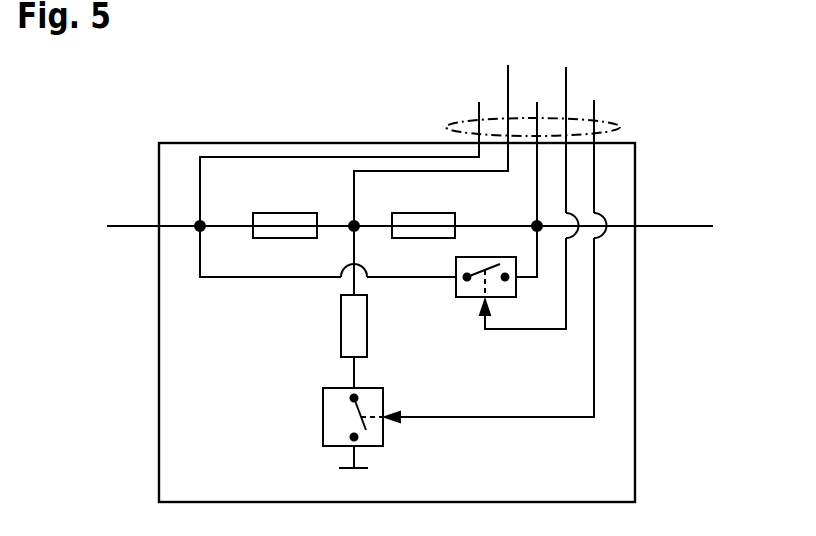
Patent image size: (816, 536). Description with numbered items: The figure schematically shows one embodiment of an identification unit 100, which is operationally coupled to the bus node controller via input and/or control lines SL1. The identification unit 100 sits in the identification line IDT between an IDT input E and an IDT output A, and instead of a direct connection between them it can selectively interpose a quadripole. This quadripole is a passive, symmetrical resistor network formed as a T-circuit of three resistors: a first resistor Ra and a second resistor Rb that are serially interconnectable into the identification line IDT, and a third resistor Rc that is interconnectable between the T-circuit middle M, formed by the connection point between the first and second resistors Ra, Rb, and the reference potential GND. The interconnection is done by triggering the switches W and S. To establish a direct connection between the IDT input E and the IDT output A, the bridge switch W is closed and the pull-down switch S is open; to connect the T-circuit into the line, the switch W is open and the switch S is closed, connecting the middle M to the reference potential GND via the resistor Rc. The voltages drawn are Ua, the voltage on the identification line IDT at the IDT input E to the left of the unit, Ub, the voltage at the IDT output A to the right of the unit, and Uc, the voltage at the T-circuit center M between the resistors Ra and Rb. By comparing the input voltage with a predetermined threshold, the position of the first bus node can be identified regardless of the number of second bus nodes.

The identification unit 100 is at (227, 488).
The input and/or control lines SL1 is at (620, 127).
The identification line IDT is at (434, 228).
The IDT input E is at (156, 239).
The IDT output A is at (625, 243).
The T-circuit middle M is at (366, 212).
The first resistor Ra is at (285, 208).
The second resistor Rb is at (423, 208).
The third resistor Rc is at (372, 326).
The voltage at the IDT input Ua is at (349, 148).
The voltage at the IDT output Ub is at (542, 148).
The voltage at the T-circuit center Uc is at (440, 131).
The switch for the T-circuit bridge W is at (512, 185).
The switch for the T-circuit pull-down resistor S is at (465, 258).
The reference potential GND is at (380, 470).